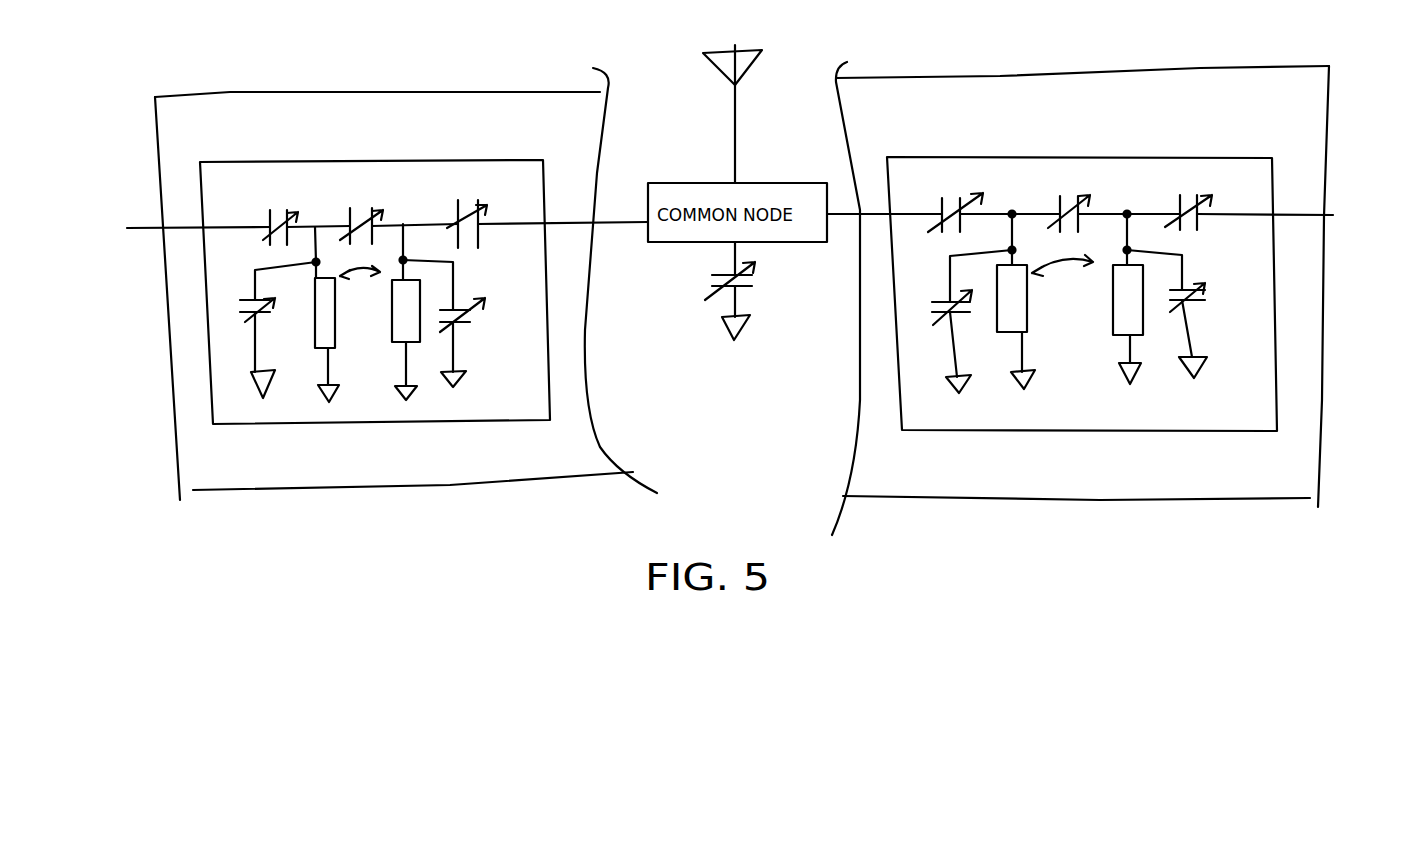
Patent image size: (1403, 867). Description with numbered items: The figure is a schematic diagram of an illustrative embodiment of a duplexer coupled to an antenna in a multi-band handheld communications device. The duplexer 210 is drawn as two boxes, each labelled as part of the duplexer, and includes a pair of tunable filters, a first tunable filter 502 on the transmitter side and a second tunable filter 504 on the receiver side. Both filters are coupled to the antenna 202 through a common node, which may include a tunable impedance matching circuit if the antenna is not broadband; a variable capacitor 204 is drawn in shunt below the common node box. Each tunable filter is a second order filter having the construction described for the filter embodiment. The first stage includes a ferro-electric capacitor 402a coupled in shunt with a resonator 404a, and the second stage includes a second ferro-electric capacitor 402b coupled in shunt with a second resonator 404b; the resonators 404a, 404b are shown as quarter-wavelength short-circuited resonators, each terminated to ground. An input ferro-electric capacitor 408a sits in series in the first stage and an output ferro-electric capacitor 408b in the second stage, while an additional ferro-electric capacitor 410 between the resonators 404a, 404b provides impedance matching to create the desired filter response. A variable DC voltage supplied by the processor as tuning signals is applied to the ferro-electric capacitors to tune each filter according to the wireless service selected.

The antenna 202 is at (740, 78).
The shunt tunable capacitor at common node 204 is at (787, 243).
The duplexer 210 is at (155, 128).
The first tunable filter 502 is at (490, 160).
The second tunable filter 504 is at (1095, 155).
The input ferro-electric capacitor 408a is at (616, 208).
The output ferro-electric capacitor 408b is at (838, 208).
The ferro-electric capacitor 410 is at (718, 206).
The ferro-electric capacitor 402a is at (735, 324).
The second ferro-electric capacitor 402b is at (465, 323).
The resonator 404a is at (653, 333).
The second resonator 404b is at (745, 332).